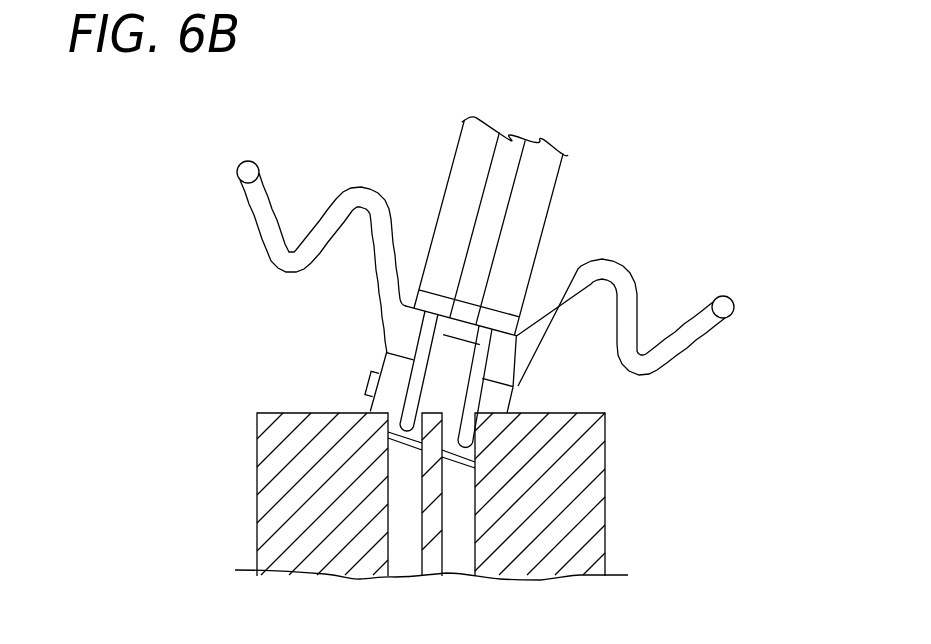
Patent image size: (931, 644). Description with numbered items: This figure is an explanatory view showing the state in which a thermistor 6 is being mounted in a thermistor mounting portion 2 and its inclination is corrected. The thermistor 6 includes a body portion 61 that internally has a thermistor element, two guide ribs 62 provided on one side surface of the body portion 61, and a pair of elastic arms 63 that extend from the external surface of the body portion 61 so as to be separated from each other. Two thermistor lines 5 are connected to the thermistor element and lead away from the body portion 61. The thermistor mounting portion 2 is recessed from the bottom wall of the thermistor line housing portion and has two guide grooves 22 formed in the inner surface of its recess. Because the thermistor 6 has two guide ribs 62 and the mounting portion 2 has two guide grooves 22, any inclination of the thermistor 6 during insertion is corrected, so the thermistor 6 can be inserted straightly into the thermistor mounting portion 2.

The thermistor mounting portion 2 is at (624, 481).
The guide grooves 22 is at (427, 511).
The thermistor lines 5 is at (467, 184).
The thermistor 6 is at (350, 379).
The body portion 61 is at (392, 365).
The guide ribs 62 is at (418, 345).
The elastic arms 63 is at (255, 203).